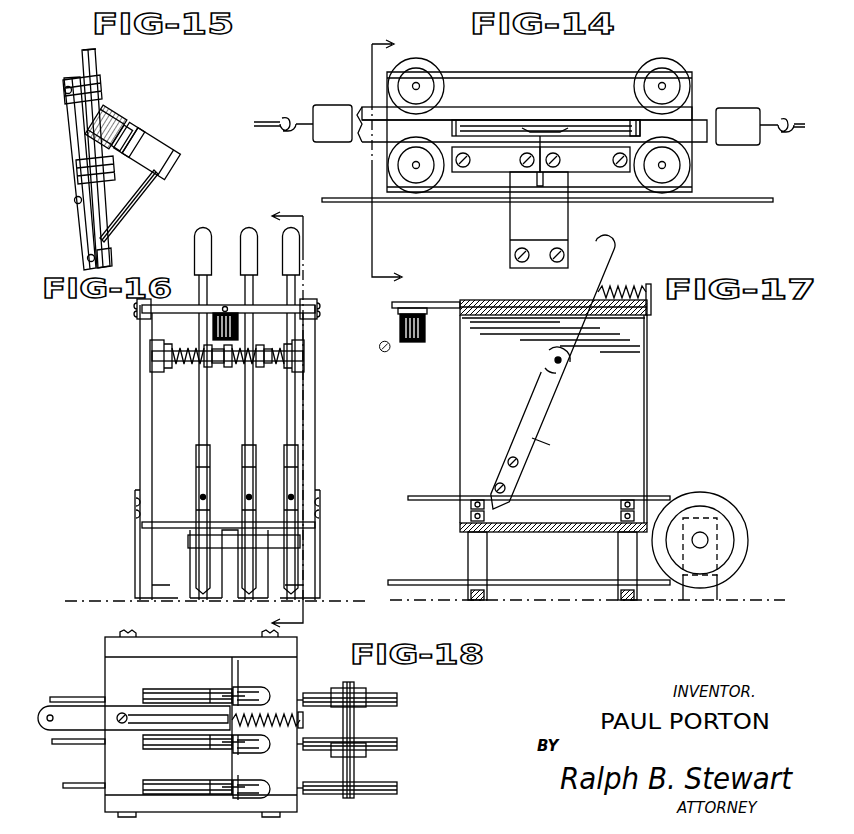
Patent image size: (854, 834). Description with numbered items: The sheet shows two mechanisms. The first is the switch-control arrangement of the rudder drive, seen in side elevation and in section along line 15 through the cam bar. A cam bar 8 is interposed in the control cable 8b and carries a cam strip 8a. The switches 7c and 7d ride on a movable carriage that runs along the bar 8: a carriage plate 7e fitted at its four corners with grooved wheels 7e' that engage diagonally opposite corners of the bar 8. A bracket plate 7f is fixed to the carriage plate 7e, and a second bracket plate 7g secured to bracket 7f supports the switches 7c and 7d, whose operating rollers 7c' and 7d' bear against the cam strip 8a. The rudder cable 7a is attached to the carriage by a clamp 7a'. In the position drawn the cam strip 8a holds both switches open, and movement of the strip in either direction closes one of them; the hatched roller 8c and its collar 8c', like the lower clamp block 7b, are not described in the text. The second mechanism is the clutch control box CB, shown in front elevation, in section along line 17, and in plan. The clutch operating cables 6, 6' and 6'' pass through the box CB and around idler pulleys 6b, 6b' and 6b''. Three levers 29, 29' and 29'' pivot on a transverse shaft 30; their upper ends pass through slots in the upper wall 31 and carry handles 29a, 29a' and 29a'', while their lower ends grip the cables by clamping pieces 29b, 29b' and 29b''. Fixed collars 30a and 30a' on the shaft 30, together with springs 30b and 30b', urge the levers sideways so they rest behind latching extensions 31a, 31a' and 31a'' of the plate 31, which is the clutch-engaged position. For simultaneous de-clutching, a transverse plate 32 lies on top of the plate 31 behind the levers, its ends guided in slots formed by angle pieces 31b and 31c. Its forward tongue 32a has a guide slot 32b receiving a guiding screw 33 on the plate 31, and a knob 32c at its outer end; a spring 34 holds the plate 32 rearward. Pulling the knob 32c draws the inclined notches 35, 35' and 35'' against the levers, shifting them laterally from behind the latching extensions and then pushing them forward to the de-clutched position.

In FIG. 15, the carriage plate 7e is at (100, 154).
In FIG. 14, the carriage plate 7e is at (527, 86).
In FIG. 15, the grooved wheels 7e' is at (89, 49).
In FIG. 14, the grooved wheels 7e' is at (541, 143).
In FIG. 15, the rudder cable 7a is at (80, 172).
In FIG. 14, the rudder cable 7a is at (547, 188).
In FIG. 15, the clamp 7a' is at (63, 174).
In FIG. 15, the bracket plate 7f is at (92, 242).
In FIG. 15, the second bracket plate 7g is at (112, 230).
In FIG. 14, the second bracket plate 7g is at (510, 238).
In FIG. 15, the hatched roller 8c is at (107, 113).
In FIG. 15, the roller collar 8c' is at (135, 124).
In FIG. 15, the switch 7d is at (159, 150).
In FIG. 15, the operating roller 7d' is at (154, 130).
In FIG. 14, the operating roller 7d' is at (546, 110).
In FIG. 14, the section line 15— 15 is at (380, 161).
In FIG. 14, the cam bar 8 is at (333, 106).
In FIG. 14, the control cable 8b is at (274, 118).
In FIG. 14, the cam strip 8a is at (531, 126).
In FIG. 14, the operating roller 7c' is at (617, 110).
In FIG. 14, the left clamp block 7b is at (490, 172).
In FIG. 14, the switch 7c is at (583, 182).
In FIG. 16, the section line 17— 17 is at (298, 417).
In FIG. 16, the clutch control box CB is at (140, 434).
In FIG. 17, the clutch control box CB is at (637, 405).
In FIG. 16, the upper wall 31 is at (282, 314).
In FIG. 17, the upper wall 31 is at (507, 318).
In FIG. 18, the upper wall 31 is at (106, 660).
In FIG. 16, the angle piece 31b is at (140, 318).
In FIG. 18, the angle piece 31b is at (112, 637).
In FIG. 16, the angle piece 31c is at (308, 300).
In FIG. 18, the angle piece 31c is at (105, 806).
In FIG. 16, the operating handle 29a is at (191, 256).
In FIG. 16, the operating handle 29a' is at (240, 253).
In FIG. 16, the operating handle 29a'' is at (316, 267).
In FIG. 17, the operating handle 29a'' is at (568, 307).
In FIG. 16, the lever 29 is at (185, 456).
In FIG. 16, the lever 29' is at (233, 456).
In FIG. 16, the lever 29'' is at (276, 456).
In FIG. 17, the lever 29'' is at (542, 440).
In FIG. 16, the clamping piece 29b is at (185, 519).
In FIG. 16, the clamping piece 29b' is at (234, 514).
In FIG. 16, the clamping piece 29b'' is at (323, 519).
In FIG. 17, the clamping piece 29b'' is at (481, 417).
In FIG. 16, the shaft 30 is at (227, 374).
In FIG. 17, the shaft 30 is at (563, 366).
In FIG. 16, the fixed collar 30a is at (169, 368).
In FIG. 16, the fixed collar 30a' is at (307, 368).
In FIG. 16, the spring 30b is at (190, 343).
In FIG. 16, the spring 30b' is at (292, 349).
In FIG. 17, the transverse plate 32 is at (632, 315).
In FIG. 18, the transverse plate 32 is at (294, 668).
In FIG. 17, the tongue 32a is at (438, 302).
In FIG. 18, the tongue 32a is at (88, 726).
In FIG. 18, the guide slot 32b is at (135, 724).
In FIG. 17, the operating knob 32c is at (414, 344).
In FIG. 17, the spring 34 is at (624, 293).
In FIG. 18, the spring 34 is at (262, 717).
In FIG. 18, the guiding screw 33 is at (122, 712).
In FIG. 18, the latching extension 31a is at (194, 684).
In FIG. 18, the latching extension 31a' is at (194, 753).
In FIG. 18, the latching extension 31a'' is at (194, 797).
In FIG. 18, the notch 35 is at (251, 685).
In FIG. 18, the notch 35' is at (251, 754).
In FIG. 18, the notch 35'' is at (258, 798).
In FIG. 18, the clutch operating cable 6 is at (77, 685).
In FIG. 18, the clutch operating cable 6' is at (69, 751).
In FIG. 17, the clutch operating cable 6'' is at (529, 548).
In FIG. 18, the clutch operating cable 6'' is at (67, 787).
In FIG. 18, the idler pulley 6b is at (359, 740).
In FIG. 18, the idler pulley 6b' is at (361, 752).
In FIG. 17, the idler pulley 6b'' is at (718, 546).
In FIG. 18, the idler pulley 6b'' is at (363, 793).